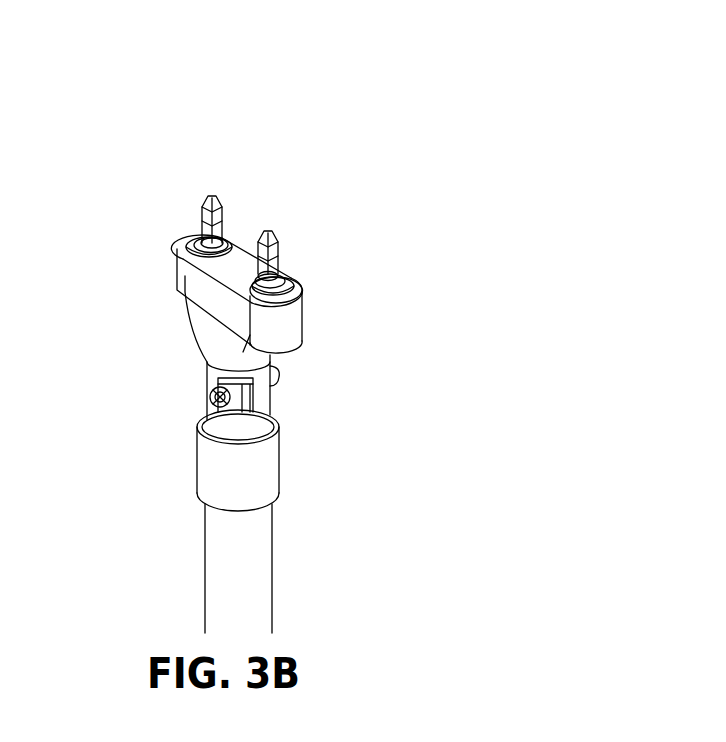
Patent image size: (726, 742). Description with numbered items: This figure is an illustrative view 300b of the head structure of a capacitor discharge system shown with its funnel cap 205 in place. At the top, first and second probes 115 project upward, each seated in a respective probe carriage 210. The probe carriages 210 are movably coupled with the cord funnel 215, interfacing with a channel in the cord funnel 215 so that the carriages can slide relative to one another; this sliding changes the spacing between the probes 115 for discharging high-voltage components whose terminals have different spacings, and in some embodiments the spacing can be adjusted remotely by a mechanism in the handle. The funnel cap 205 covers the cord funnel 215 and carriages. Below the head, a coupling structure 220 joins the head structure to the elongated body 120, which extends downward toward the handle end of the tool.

The illustrative view of the head structure with the funnel cap 300b is at (284, 98).
The probes 115 is at (267, 228).
The cord funnel 215 is at (180, 265).
The probe carriages 210 is at (283, 268).
The funnel cap 205 is at (236, 268).
The coupling structure 220 is at (278, 433).
The elongated body 120 is at (272, 613).